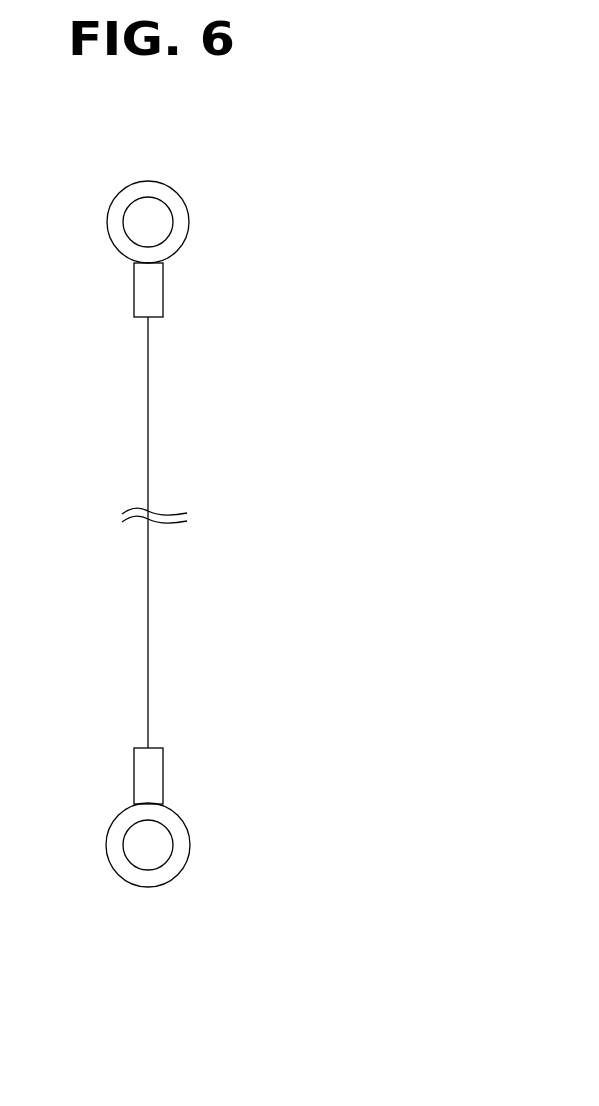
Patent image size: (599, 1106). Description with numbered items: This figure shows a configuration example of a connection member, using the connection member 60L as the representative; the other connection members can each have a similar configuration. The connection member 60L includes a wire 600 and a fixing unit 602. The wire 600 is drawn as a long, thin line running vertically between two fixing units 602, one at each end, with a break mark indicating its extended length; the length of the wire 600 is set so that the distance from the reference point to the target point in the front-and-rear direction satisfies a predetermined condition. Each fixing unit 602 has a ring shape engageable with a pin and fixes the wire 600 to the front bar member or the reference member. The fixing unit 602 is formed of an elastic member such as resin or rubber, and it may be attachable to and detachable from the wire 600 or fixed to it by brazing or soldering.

The connection member 60L is at (248, 373).
The wire 600 is at (148, 652).
The fixing unit 602 is at (111, 243).